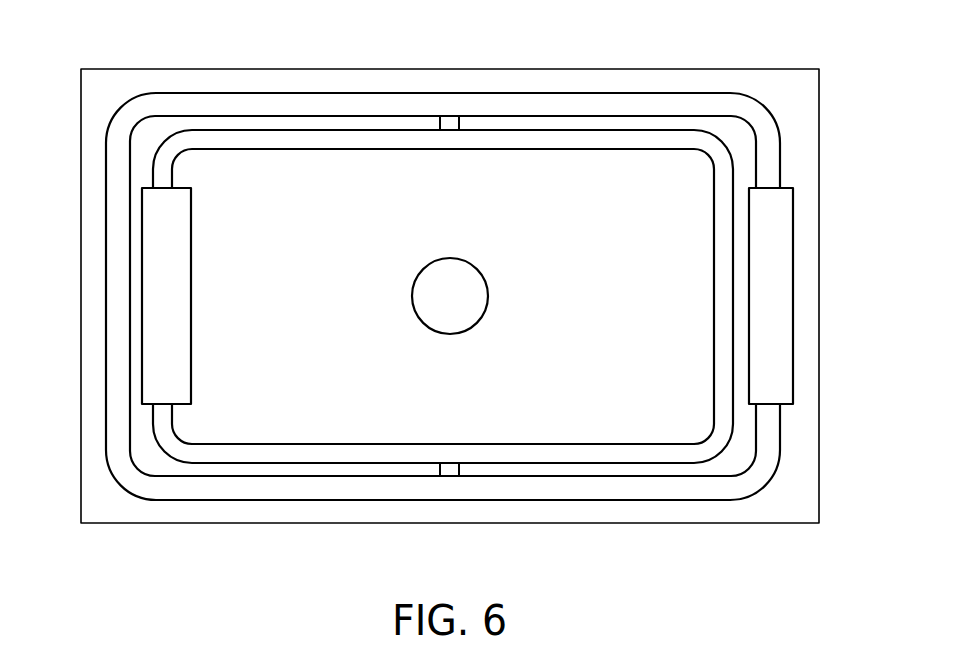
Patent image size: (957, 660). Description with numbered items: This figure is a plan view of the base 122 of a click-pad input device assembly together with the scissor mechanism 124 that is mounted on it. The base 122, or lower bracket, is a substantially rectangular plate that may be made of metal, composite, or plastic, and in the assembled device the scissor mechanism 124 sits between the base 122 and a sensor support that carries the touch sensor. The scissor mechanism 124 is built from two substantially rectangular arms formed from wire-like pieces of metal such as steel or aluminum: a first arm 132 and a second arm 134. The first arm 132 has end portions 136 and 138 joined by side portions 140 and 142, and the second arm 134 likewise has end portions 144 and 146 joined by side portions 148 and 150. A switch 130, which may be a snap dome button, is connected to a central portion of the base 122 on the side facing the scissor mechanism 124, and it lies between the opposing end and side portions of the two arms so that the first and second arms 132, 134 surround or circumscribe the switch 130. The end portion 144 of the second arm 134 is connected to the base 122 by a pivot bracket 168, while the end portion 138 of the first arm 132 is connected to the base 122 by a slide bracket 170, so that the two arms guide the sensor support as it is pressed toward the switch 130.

The base 122 is at (97, 75).
The scissor mechanism 124 is at (814, 149).
The switch 130 is at (443, 262).
The first arm 132 is at (768, 127).
The second arm 134 is at (163, 147).
The end portion 136 is at (115, 297).
The end portion 138 is at (768, 420).
The side portion 140 is at (527, 107).
The side portion 142 is at (380, 497).
The end portion 144 is at (183, 441).
The end portion 146 is at (718, 371).
The side portion 148 is at (330, 142).
The side portion 150 is at (357, 449).
The pivot bracket 168 is at (182, 321).
The slide bracket 170 is at (782, 289).